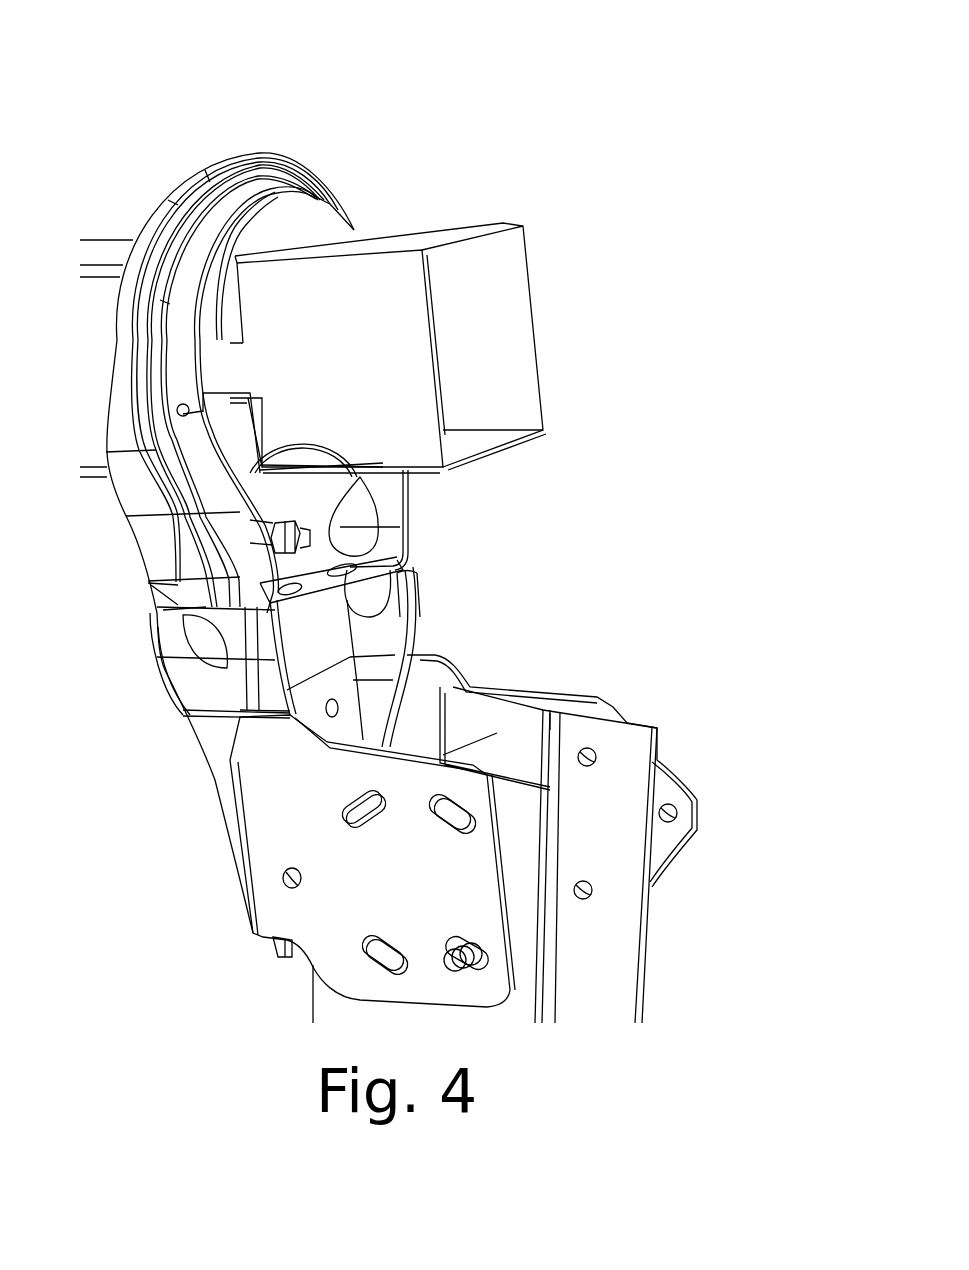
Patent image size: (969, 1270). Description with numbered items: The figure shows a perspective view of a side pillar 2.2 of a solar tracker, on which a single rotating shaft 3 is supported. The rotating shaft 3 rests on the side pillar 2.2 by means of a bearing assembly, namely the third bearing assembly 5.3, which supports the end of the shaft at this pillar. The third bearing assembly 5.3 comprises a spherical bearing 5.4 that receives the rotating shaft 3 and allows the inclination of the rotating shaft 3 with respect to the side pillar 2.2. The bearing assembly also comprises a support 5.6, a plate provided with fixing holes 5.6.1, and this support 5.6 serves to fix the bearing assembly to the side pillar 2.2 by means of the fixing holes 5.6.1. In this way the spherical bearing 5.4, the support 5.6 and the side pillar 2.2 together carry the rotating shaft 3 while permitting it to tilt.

The spherical bearing 5.4 is at (262, 232).
The rotating shaft 3 is at (380, 308).
The third bearing assembly 5.3 is at (143, 715).
The support 5.6 is at (320, 923).
The fixing holes 5.6.1 is at (582, 747).
The side pillar 2.2 is at (592, 843).